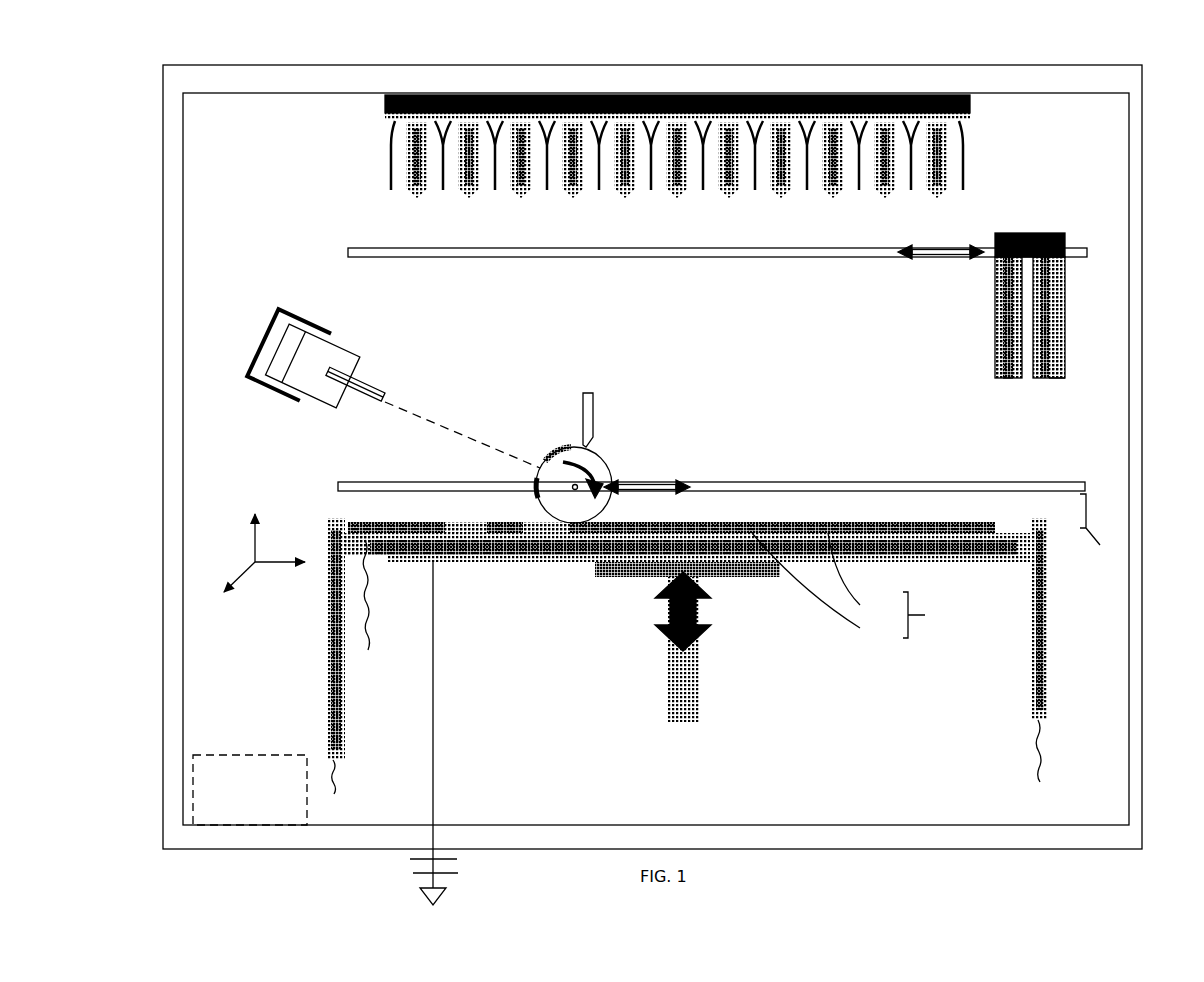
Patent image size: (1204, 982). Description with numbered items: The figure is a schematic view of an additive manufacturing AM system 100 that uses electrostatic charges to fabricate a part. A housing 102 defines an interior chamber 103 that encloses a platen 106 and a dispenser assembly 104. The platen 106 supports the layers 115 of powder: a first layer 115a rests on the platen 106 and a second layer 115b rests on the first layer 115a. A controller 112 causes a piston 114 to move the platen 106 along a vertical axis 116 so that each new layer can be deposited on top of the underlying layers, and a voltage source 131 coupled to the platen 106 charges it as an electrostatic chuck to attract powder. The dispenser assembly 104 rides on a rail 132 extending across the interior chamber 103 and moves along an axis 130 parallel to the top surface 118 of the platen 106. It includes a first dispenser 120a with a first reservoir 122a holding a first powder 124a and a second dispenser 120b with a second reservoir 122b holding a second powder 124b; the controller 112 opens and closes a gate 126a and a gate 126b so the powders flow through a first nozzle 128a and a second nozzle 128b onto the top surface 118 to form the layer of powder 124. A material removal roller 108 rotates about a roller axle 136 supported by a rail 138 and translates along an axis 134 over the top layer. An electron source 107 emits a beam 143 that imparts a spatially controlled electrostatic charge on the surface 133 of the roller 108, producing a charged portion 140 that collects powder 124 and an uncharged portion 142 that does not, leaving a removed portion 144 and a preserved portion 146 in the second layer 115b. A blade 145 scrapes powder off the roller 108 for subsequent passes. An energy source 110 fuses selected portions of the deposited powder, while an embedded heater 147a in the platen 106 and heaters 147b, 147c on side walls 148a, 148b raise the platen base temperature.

The AM system 100 is at (1030, 48).
The housing 102 is at (1134, 253).
The interior chamber 103 is at (1033, 146).
The dispenser assembly 104 is at (936, 414).
The platen 106 is at (735, 597).
The electron source 107 is at (327, 375).
The material removal roller 108 is at (559, 469).
The energy source 110 is at (374, 160).
The controller 112 is at (262, 799).
The piston 114 is at (640, 573).
The layer 115 is at (1055, 526).
The first layer 115a is at (998, 529).
The second layer 115b is at (991, 522).
The vertical axis 116 is at (668, 645).
The top surface 118 is at (815, 534).
The first dispenser 120a is at (912, 447).
The second dispenser 120b is at (974, 435).
The first reservoir 122a is at (1007, 338).
The second reservoir 122b is at (1048, 335).
The powder 124 is at (932, 615).
The first powder 124a is at (1007, 288).
The second powder 124b is at (1044, 310).
The gate 126a is at (1000, 378).
The gate 126b is at (1040, 378).
The first nozzle 128a is at (1038, 393).
The second nozzle 128b is at (1085, 391).
The axis 130 is at (935, 257).
The voltage source 131 is at (413, 872).
The rail 132 is at (815, 258).
The surface 133 is at (595, 465).
The axis 134 is at (660, 485).
The roller axle 136 is at (573, 486).
The rail 138 is at (812, 483).
The charged portion 140 is at (536, 497).
The uncharged portion 142 is at (538, 468).
The beam 143 is at (437, 427).
The removed portion 144 is at (520, 534).
The blade 145 is at (585, 393).
The preserved portion 146 is at (486, 534).
The embedded heater 147a is at (582, 541).
The heater 147b is at (330, 623).
The heater 147c is at (1044, 665).
The side wall 148a is at (328, 650).
The side wall 148b is at (1034, 690).